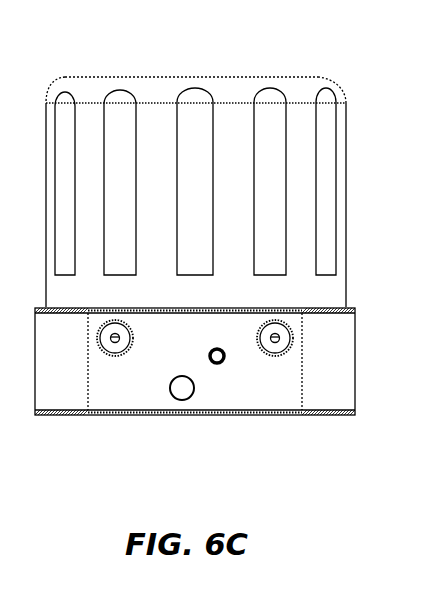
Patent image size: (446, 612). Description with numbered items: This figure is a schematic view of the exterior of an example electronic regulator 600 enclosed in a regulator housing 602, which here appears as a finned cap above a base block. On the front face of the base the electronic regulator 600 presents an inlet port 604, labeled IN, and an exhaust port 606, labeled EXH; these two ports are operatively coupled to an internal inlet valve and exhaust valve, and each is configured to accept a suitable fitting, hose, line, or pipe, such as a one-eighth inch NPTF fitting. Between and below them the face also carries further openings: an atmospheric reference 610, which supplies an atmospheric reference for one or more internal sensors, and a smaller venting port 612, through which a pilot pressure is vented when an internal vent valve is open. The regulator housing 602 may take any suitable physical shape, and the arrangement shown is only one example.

The electronic regulator 600 is at (220, 78).
The regulator housing 602 is at (305, 162).
The inlet port 604 is at (107, 353).
The exhaust port 606 is at (279, 344).
The atmospheric reference 610 is at (175, 398).
The venting port 612 is at (222, 360).